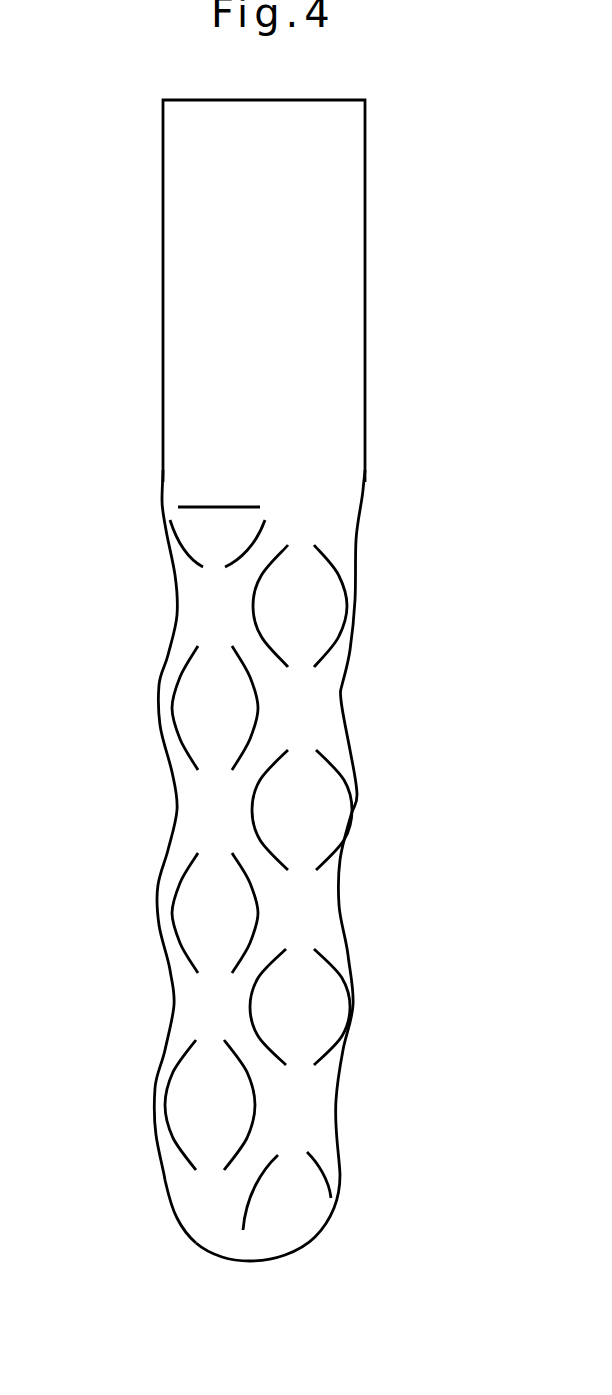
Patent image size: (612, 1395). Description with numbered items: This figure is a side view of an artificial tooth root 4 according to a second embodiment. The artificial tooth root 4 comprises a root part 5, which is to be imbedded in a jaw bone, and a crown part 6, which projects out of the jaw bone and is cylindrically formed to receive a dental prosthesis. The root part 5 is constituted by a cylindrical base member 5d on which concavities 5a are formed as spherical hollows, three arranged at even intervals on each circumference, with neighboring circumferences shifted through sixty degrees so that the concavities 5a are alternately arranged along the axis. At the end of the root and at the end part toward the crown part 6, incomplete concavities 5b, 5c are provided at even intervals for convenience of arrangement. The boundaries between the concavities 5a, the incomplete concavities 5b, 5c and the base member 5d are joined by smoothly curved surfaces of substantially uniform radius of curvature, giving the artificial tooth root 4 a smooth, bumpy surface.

The artificial tooth root 4 is at (126, 763).
The root part 5 is at (175, 1234).
The concavities 5a is at (181, 703).
The incomplete concavities 5b is at (317, 1211).
The incomplete concavities 5c is at (185, 542).
The base member 5d is at (203, 1212).
The crown part 6 is at (158, 203).